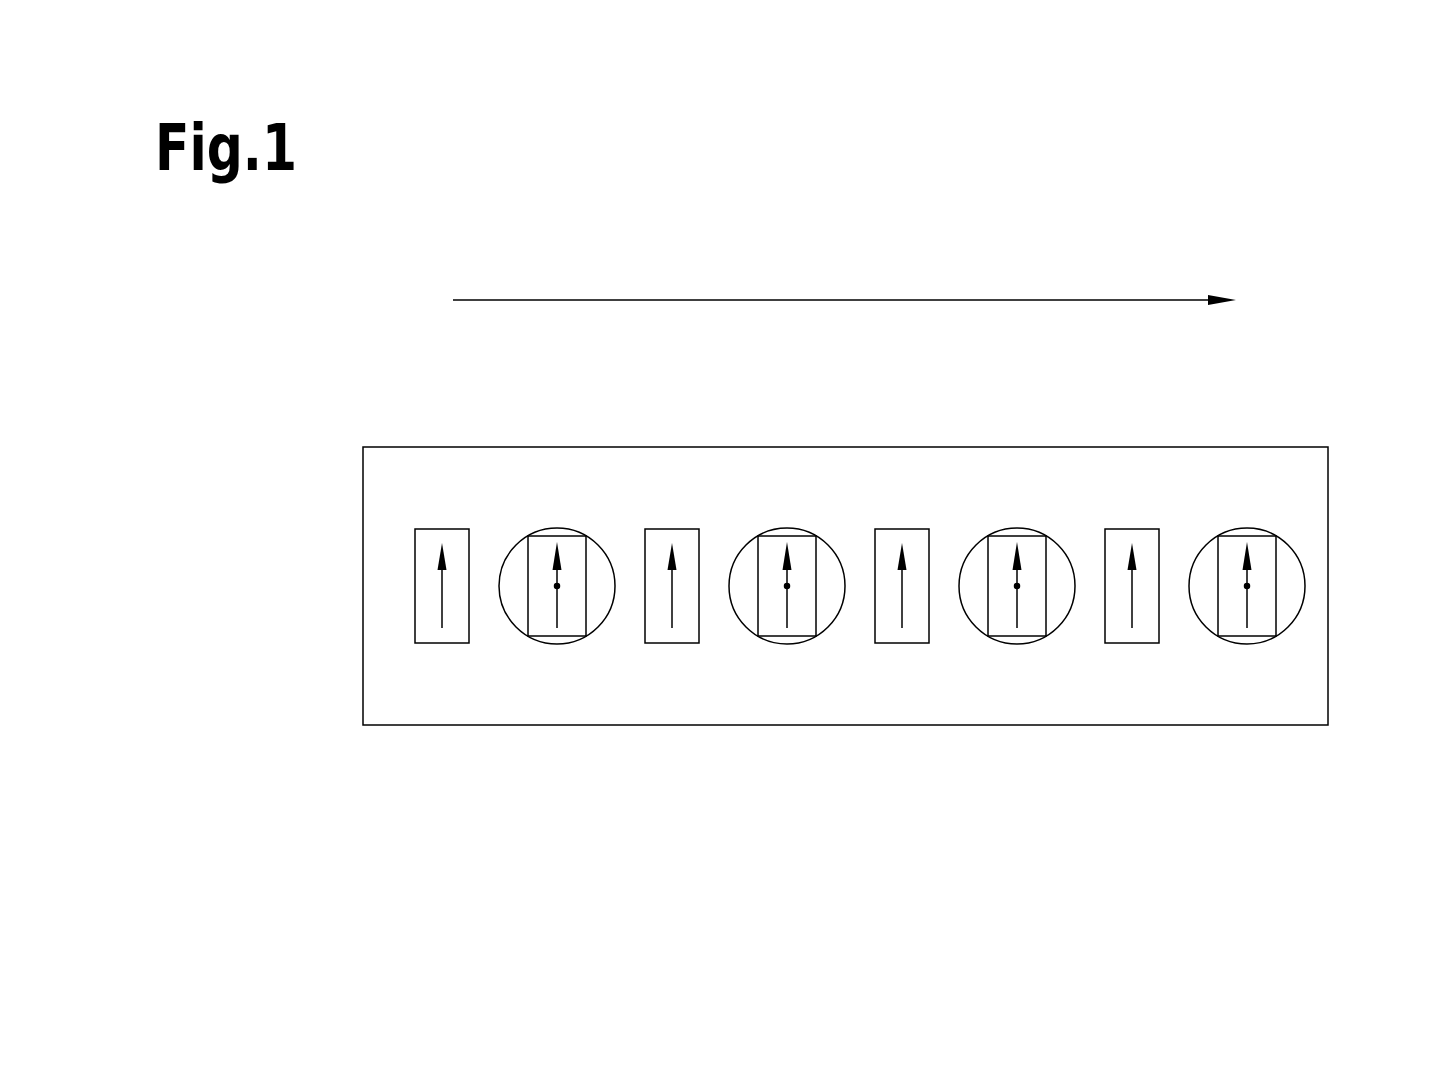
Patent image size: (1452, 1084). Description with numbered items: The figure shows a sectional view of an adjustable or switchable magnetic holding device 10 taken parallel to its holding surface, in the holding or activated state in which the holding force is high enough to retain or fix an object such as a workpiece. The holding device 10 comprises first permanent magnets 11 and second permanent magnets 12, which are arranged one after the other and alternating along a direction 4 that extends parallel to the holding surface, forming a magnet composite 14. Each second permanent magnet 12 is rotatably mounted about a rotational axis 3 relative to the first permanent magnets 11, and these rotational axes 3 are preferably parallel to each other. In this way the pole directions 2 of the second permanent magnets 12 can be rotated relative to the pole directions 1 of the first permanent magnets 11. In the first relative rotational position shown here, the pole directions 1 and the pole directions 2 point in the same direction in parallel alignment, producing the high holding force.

The pole direction 1 is at (442, 603).
The pole direction 2 is at (557, 586).
The rotational axis 3 is at (557, 586).
The direction 4 is at (855, 300).
The holding device 10 is at (312, 425).
The first permanent magnet 11 is at (448, 643).
The second permanent magnet 12 is at (557, 530).
The magnet composite 14 is at (320, 707).